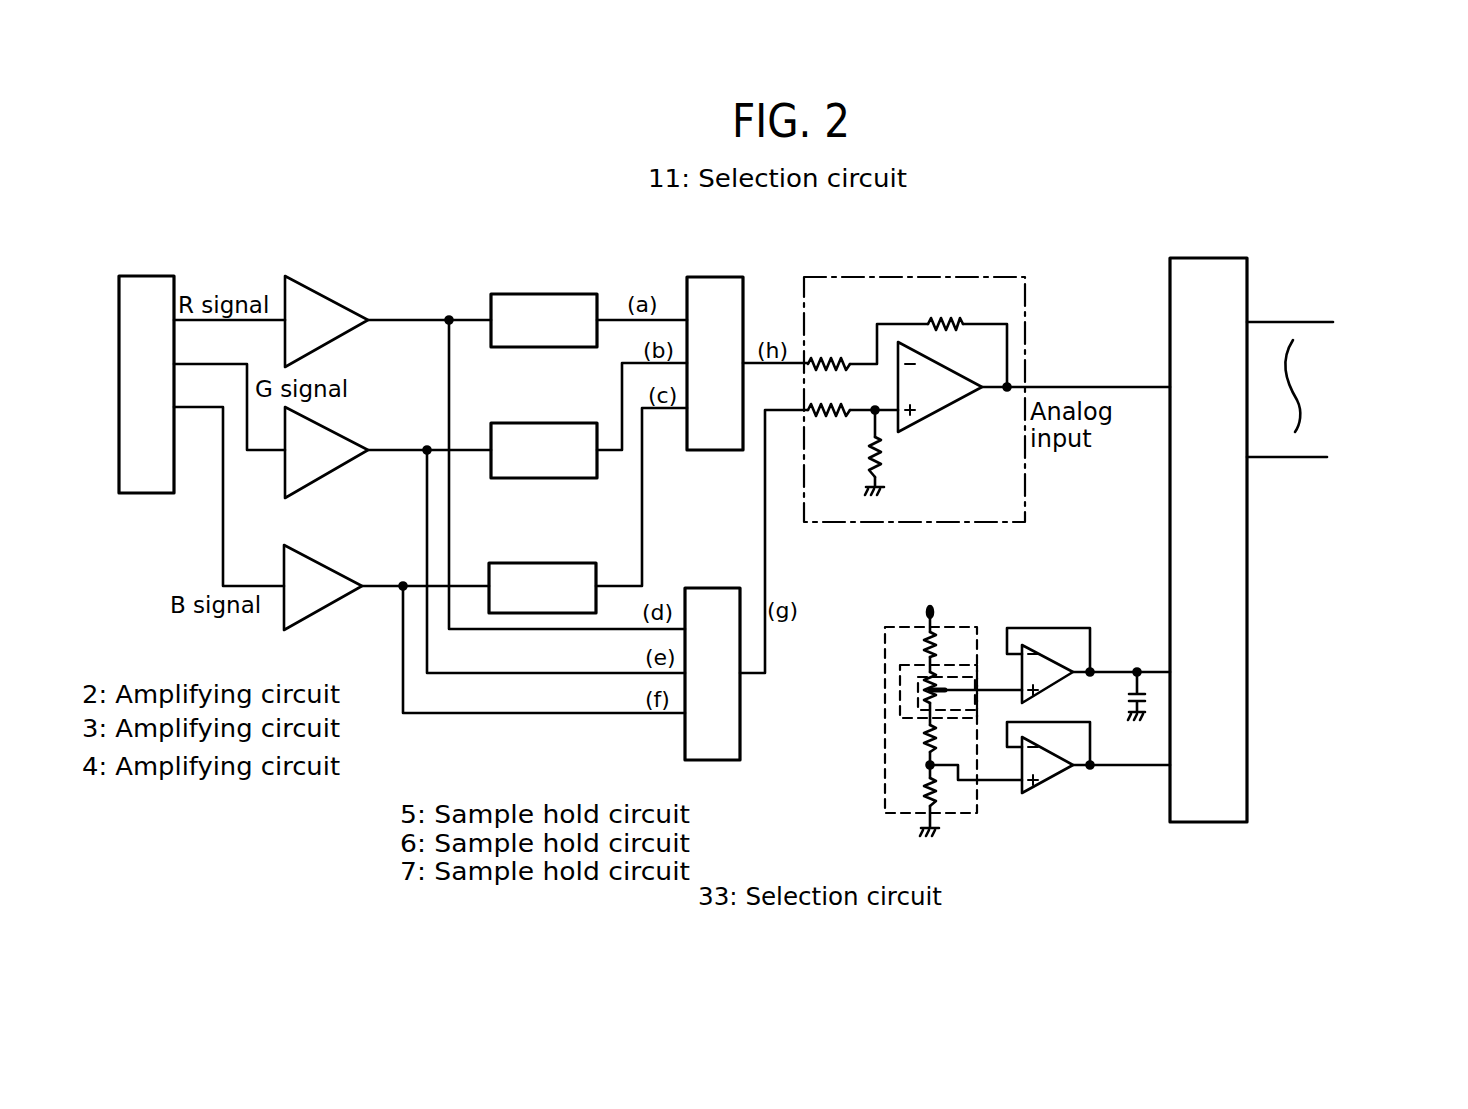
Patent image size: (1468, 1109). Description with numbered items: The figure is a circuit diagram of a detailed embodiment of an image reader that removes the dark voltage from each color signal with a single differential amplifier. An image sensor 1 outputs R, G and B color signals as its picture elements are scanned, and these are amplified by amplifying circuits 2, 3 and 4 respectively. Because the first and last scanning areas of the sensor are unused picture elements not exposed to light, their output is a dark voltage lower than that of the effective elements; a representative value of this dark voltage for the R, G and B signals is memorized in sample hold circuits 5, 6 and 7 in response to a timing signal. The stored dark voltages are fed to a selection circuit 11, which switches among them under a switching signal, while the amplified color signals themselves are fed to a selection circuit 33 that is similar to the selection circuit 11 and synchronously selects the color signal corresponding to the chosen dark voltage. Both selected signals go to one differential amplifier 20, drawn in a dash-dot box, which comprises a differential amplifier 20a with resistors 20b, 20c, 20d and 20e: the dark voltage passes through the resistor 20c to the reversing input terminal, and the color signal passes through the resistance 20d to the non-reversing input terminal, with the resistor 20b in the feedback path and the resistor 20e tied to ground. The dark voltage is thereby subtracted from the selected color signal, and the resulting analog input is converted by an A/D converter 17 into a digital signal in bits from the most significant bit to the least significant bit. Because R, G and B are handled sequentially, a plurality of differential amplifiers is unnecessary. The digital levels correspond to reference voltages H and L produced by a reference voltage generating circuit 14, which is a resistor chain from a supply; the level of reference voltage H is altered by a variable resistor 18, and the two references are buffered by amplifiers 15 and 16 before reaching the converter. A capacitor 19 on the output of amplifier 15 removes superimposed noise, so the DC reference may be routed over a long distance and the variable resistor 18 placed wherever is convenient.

The image sensor 1 is at (140, 287).
The amplifying circuit 2 is at (327, 292).
The amplifying circuit 3 is at (358, 418).
The amplifying circuit 4 is at (317, 561).
The sample hold circuit 5 is at (542, 293).
The sample hold circuit 6 is at (540, 423).
The sample hold circuit 7 is at (552, 562).
The selection circuit 11 is at (709, 275).
The selection circuit 33 is at (705, 588).
The differential amplifier 20 is at (895, 275).
The differential amplifier 20a is at (928, 417).
The resistor 20b is at (942, 316).
The resistor 20c is at (830, 362).
The resistance 20d is at (833, 408).
The resistor 20e is at (883, 450).
The A/D converter 17 is at (1207, 228).
The reference voltage generating circuit 14 is at (928, 709).
The variable resistor 18 is at (977, 693).
The amplifier 15 is at (1073, 675).
The amplifier 16 is at (1063, 774).
The capacitor 19 is at (1132, 698).